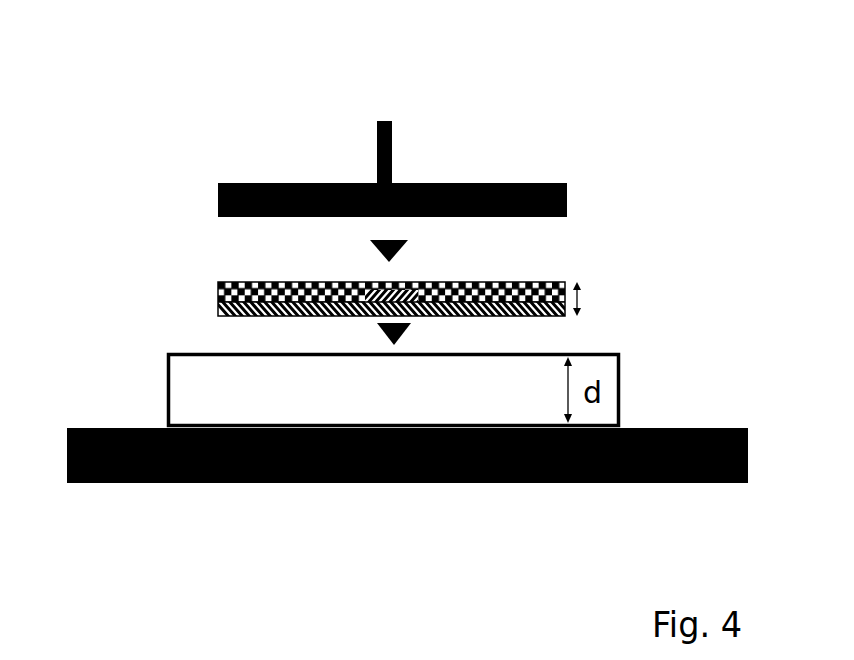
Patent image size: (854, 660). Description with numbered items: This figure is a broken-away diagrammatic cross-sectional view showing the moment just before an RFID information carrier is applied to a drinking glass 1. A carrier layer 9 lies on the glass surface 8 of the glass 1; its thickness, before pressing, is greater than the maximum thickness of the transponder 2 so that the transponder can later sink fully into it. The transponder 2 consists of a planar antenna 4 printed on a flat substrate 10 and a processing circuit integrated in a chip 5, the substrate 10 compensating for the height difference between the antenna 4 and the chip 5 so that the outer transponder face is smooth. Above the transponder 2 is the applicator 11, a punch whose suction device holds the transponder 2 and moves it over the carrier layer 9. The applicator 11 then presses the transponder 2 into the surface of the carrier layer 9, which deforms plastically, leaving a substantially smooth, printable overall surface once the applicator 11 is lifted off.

The drinking glass 1 is at (365, 483).
The transponder 2 is at (367, 245).
The antenna 4 is at (525, 310).
The chip 5 is at (372, 295).
The glass surface 8 is at (146, 406).
The carrier layer 9 is at (252, 392).
The substrate 10 is at (270, 290).
The applicator 11 is at (487, 183).